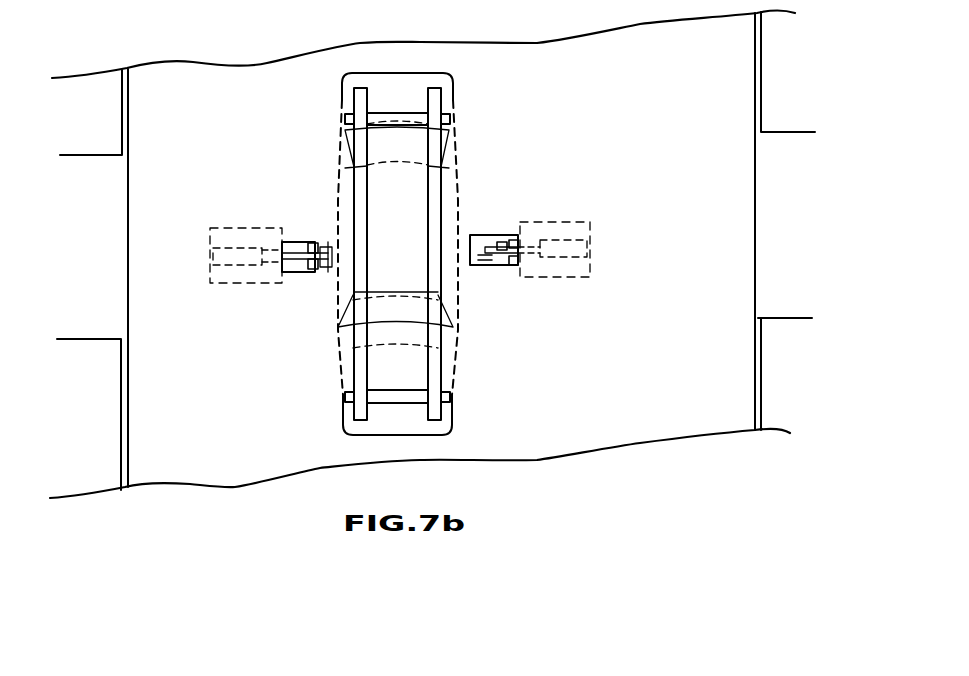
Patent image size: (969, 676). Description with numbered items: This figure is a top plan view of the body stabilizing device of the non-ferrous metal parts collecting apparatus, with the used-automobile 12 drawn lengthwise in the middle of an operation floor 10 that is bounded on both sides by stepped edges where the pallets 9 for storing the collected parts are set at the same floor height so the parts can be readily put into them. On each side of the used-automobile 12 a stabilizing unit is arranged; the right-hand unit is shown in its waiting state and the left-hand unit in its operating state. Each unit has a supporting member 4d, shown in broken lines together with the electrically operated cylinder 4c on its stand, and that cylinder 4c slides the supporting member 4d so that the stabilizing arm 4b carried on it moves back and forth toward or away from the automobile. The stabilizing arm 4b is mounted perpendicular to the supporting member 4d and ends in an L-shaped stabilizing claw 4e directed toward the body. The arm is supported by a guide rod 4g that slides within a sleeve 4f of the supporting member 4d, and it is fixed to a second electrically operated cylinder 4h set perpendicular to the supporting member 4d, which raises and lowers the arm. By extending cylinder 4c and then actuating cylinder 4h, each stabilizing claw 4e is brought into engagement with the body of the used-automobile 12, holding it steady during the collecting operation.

The pallet 9 is at (88, 158).
The operation floor 10 is at (129, 261).
The used-automobile 12 is at (347, 92).
The stabilizing arm 4b is at (324, 272).
The electrically operated cylinder 4c is at (233, 248).
The supporting member 4d is at (280, 283).
The stabilizing claw 4e is at (318, 243).
The sleeve 4f is at (512, 266).
The guide rod 4g is at (500, 266).
The electrically operated cylinder 4h is at (304, 242).